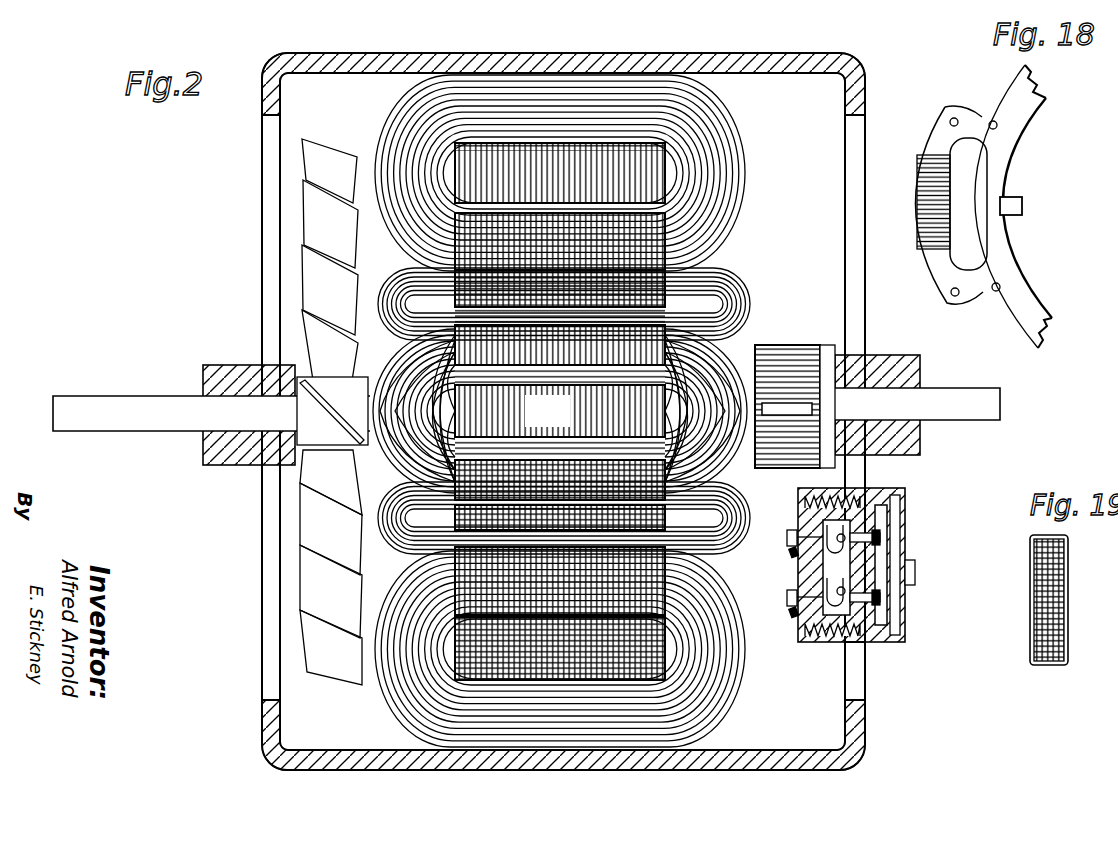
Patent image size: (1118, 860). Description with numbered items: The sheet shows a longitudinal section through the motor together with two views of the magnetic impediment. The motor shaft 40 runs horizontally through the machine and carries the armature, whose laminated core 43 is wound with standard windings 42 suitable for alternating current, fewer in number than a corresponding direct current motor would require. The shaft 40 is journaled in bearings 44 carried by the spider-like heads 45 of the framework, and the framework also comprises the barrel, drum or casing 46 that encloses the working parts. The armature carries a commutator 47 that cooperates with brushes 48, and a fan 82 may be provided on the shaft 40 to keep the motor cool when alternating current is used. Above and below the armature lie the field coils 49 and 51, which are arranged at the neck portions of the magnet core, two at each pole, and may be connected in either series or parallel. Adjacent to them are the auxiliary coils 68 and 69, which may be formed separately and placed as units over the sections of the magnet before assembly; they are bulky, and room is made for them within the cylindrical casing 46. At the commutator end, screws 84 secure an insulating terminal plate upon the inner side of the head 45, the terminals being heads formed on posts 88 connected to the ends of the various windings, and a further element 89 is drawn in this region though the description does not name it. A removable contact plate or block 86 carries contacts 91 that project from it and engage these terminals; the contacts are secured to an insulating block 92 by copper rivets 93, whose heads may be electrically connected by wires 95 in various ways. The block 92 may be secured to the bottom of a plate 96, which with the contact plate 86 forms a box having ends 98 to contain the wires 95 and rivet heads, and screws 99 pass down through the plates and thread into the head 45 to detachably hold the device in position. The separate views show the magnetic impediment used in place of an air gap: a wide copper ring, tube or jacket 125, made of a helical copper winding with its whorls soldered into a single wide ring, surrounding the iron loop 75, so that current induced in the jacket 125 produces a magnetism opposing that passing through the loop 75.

In FIG. 2, the motor shaft 40 is at (110, 405).
In FIG. 2, the windings 42 is at (789, 553).
In FIG. 2, the laminated core 43 is at (560, 411).
In FIG. 2, the bearings 44 is at (237, 357).
In FIG. 2, the spider-like heads 45 is at (262, 200).
In FIG. 2, the casing 46 is at (643, 55).
In FIG. 2, the commutator 47 is at (760, 468).
In FIG. 2, the brushes 48 is at (826, 380).
In FIG. 2, the field coil 49 is at (735, 168).
In FIG. 2, the field coil 51 is at (750, 708).
In FIG. 2, the auxiliary coil 68 is at (736, 287).
In FIG. 2, the auxiliary coil 69 is at (398, 528).
In FIG. 18, the iron loop 75 is at (945, 130).
In FIG. 19, the iron loop 75 is at (1052, 620).
In FIG. 2, the fan 82 is at (318, 690).
In FIG. 2, the screws 84 is at (800, 498).
In FIG. 2, the contact plate 86 is at (882, 540).
In FIG. 2, the posts 88 is at (787, 537).
In FIG. 2, the brush lead 89 is at (790, 612).
In FIG. 2, the contacts 91 is at (795, 580).
In FIG. 2, the insulating block 92 is at (882, 492).
In FIG. 2, the copper rivets 93 is at (900, 510).
In FIG. 2, the wires 95 is at (885, 565).
In FIG. 2, the plate 96 is at (868, 648).
In FIG. 2, the ends 98 is at (890, 612).
In FIG. 2, the screws 99 is at (916, 574).
In FIG. 18, the copper jacket 125 is at (947, 175).
In FIG. 19, the copper jacket 125 is at (1068, 560).